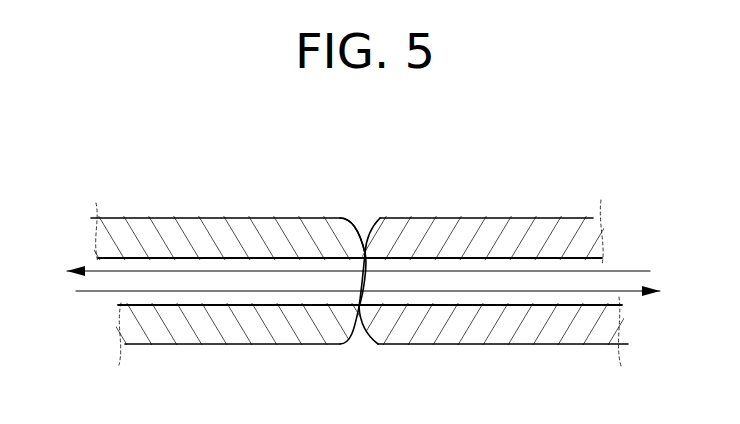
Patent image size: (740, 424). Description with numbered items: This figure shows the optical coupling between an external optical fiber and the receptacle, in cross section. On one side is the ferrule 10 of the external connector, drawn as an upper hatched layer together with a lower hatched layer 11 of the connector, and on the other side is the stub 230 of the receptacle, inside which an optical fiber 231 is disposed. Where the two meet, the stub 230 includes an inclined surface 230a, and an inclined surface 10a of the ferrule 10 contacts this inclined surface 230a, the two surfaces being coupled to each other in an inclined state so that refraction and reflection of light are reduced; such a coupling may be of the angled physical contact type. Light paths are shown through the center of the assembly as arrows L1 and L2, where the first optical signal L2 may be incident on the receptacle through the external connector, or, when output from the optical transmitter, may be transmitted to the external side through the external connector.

The ferrule 10 is at (212, 230).
The inclined surface of the ferrule 10a is at (352, 214).
The second substrate 11 is at (218, 299).
The stub 230 is at (488, 333).
The inclined surface of the stub 230a is at (376, 214).
The optical fiber 231 is at (508, 262).
The first direction L1 is at (641, 297).
The first optical signal L2 is at (640, 272).